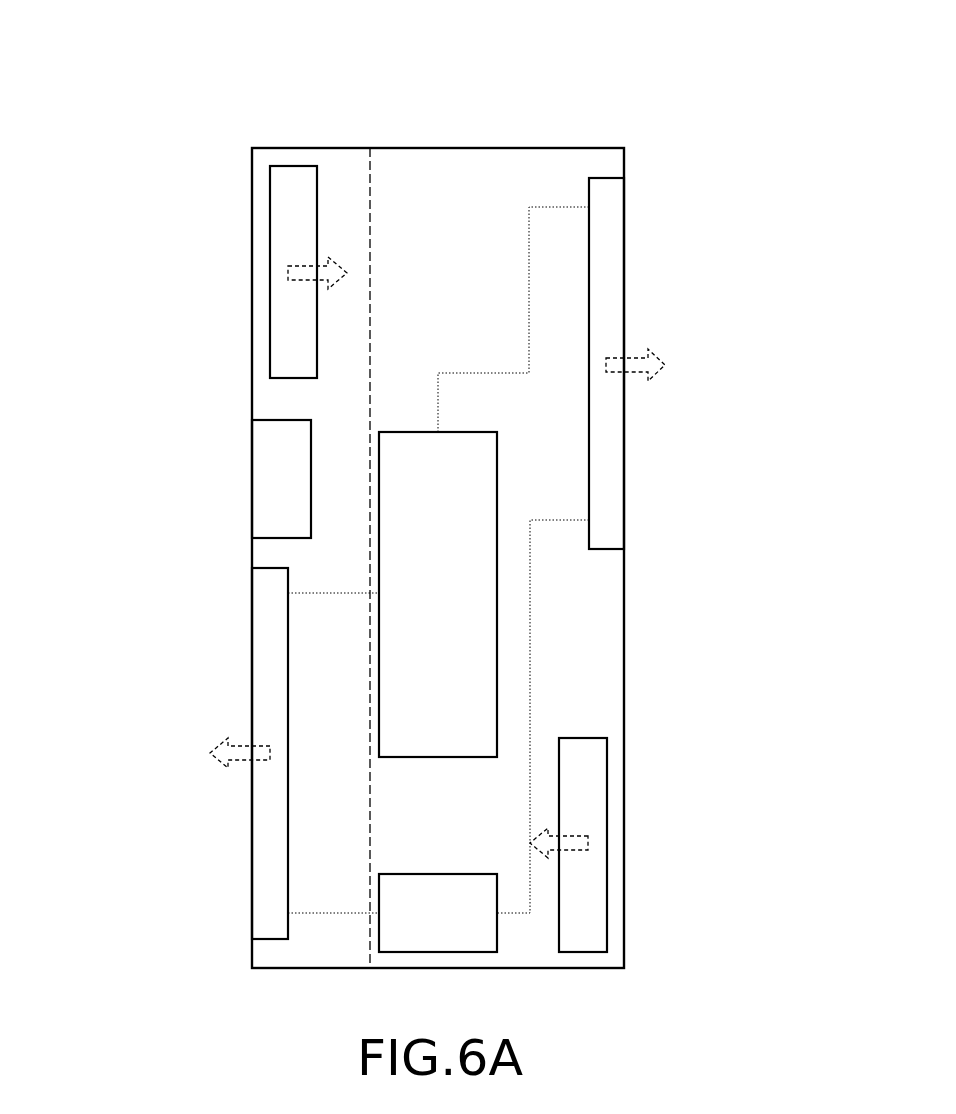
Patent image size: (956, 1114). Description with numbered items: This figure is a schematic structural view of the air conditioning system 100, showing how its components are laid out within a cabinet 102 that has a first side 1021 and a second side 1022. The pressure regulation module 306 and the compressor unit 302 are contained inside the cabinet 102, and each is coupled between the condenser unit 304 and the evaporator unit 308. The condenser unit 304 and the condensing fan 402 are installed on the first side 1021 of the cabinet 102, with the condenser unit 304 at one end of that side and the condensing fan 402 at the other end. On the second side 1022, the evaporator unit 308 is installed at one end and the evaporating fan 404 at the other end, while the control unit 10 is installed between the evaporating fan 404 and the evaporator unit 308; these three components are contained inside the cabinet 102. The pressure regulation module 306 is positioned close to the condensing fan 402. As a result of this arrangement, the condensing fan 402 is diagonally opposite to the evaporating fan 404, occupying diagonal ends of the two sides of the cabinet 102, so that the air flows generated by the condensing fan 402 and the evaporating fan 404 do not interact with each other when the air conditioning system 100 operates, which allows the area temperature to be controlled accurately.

The air conditioning system 100 is at (458, 39).
The cabinet 102 is at (500, 160).
The first side 1021 is at (653, 266).
The second side 1022 is at (222, 264).
The control unit 10 is at (270, 480).
The compressor unit 302 is at (423, 442).
The condenser unit 304 is at (607, 435).
The pressure regulation module 306 is at (441, 885).
The evaporator unit 308 is at (267, 835).
The condensing fan 402 is at (593, 792).
The evaporating fan 404 is at (280, 308).